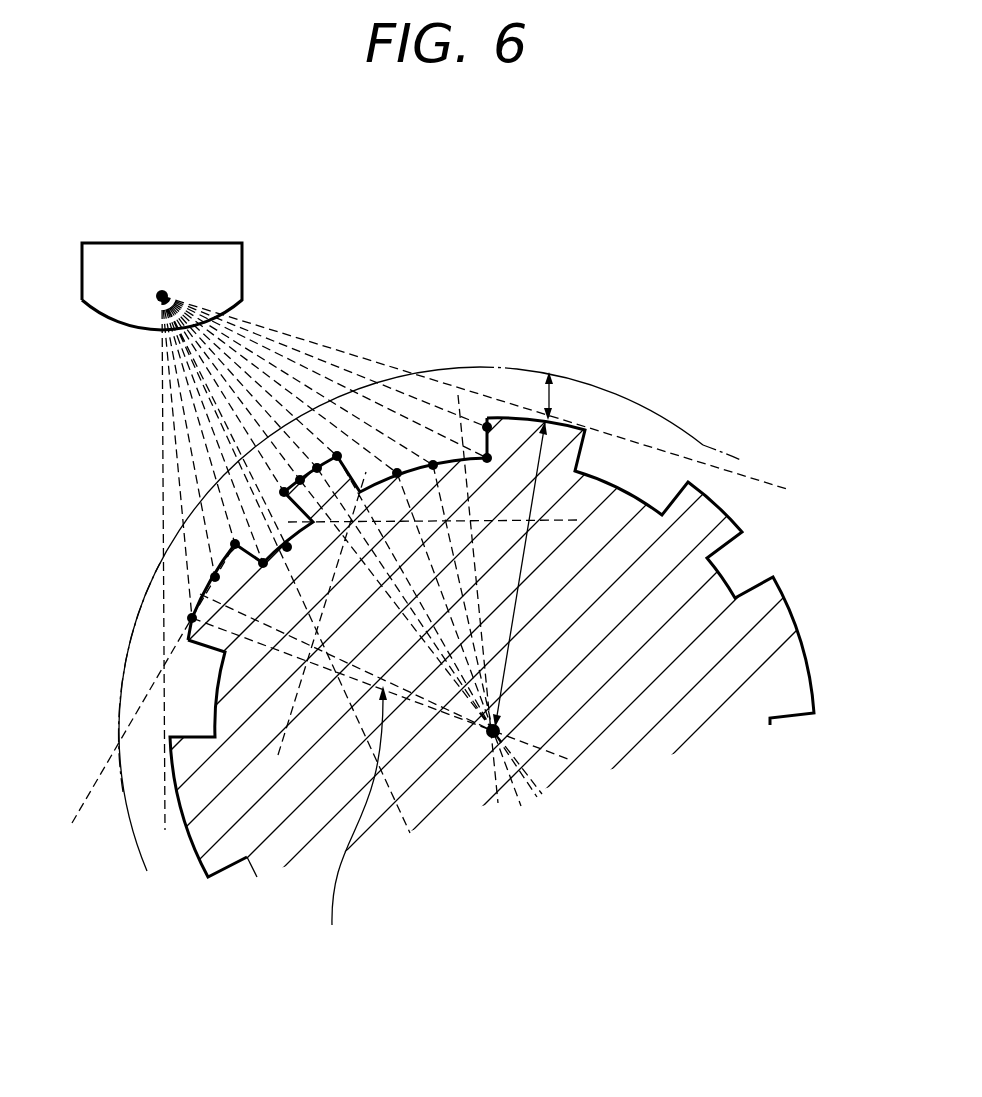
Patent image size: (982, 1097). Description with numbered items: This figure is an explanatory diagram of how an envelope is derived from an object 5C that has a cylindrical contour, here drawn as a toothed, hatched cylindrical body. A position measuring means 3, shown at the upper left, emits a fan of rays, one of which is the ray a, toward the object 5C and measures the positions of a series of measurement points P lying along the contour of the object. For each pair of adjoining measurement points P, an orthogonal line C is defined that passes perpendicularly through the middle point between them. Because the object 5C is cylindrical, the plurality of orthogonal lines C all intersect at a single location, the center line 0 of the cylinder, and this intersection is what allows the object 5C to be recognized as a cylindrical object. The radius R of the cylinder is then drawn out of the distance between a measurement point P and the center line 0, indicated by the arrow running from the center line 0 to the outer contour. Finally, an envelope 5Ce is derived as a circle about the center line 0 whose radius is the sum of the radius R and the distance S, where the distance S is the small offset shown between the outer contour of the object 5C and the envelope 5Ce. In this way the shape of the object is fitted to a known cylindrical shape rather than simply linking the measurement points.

The position measuring means 3 is at (243, 258).
The object 5C is at (812, 645).
The envelope 5Ce is at (677, 413).
The reference ray a is at (163, 438).
The measurement point P is at (212, 575).
The distance S is at (558, 396).
The radius R is at (520, 575).
The center line 0 is at (482, 745).
The orthogonal line C is at (355, 825).